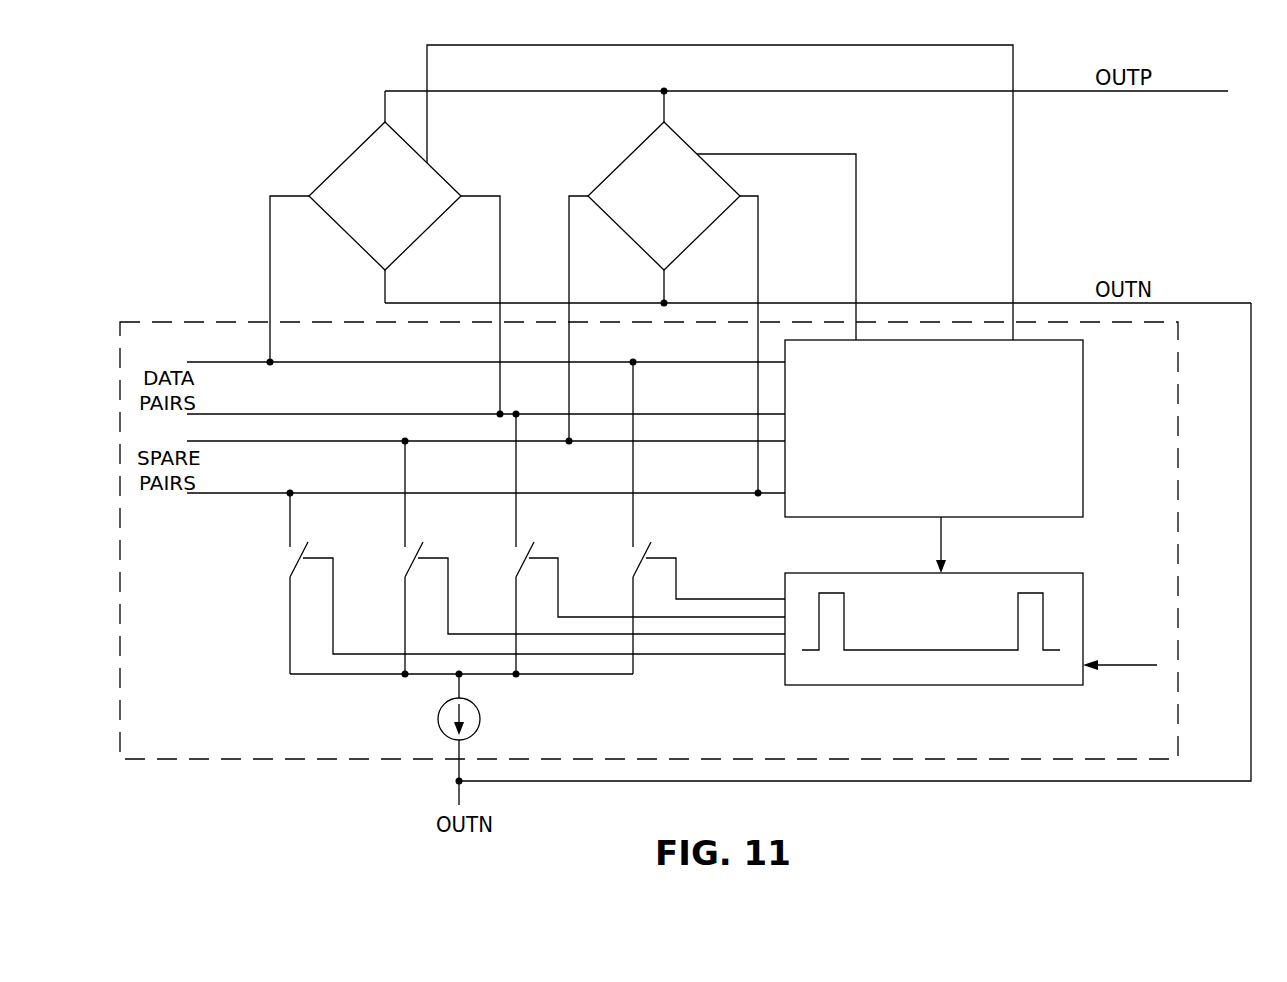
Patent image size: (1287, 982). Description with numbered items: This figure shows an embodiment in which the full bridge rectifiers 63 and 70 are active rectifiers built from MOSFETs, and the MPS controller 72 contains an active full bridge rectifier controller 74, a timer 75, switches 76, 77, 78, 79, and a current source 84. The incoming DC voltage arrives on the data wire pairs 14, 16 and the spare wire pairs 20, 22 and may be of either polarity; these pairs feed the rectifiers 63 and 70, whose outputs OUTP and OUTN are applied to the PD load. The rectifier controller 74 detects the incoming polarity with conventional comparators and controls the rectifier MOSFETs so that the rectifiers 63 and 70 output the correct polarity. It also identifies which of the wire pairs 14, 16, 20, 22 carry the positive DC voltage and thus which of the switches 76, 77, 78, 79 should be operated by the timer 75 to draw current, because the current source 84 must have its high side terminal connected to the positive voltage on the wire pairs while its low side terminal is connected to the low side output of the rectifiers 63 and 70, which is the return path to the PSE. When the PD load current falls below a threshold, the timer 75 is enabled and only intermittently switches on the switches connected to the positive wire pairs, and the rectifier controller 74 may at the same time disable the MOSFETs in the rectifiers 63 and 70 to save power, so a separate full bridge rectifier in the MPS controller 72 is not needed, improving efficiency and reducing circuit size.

The full bridge rectifier 63 is at (336, 172).
The full bridge rectifier 70 is at (612, 172).
The MPS controller 72 is at (1179, 396).
The active full bridge rectifier controller 74 is at (1083, 415).
The timer 75 is at (1083, 610).
The switch 76 is at (289, 556).
The switch 77 is at (403, 556).
The switch 78 is at (514, 556).
The switch 79 is at (631, 556).
The current source 84 is at (481, 719).
The wire pair 14 is at (486, 388).
The wire pair 16 is at (486, 388).
The wire pair 20 is at (486, 467).
The wire pair 22 is at (486, 467).